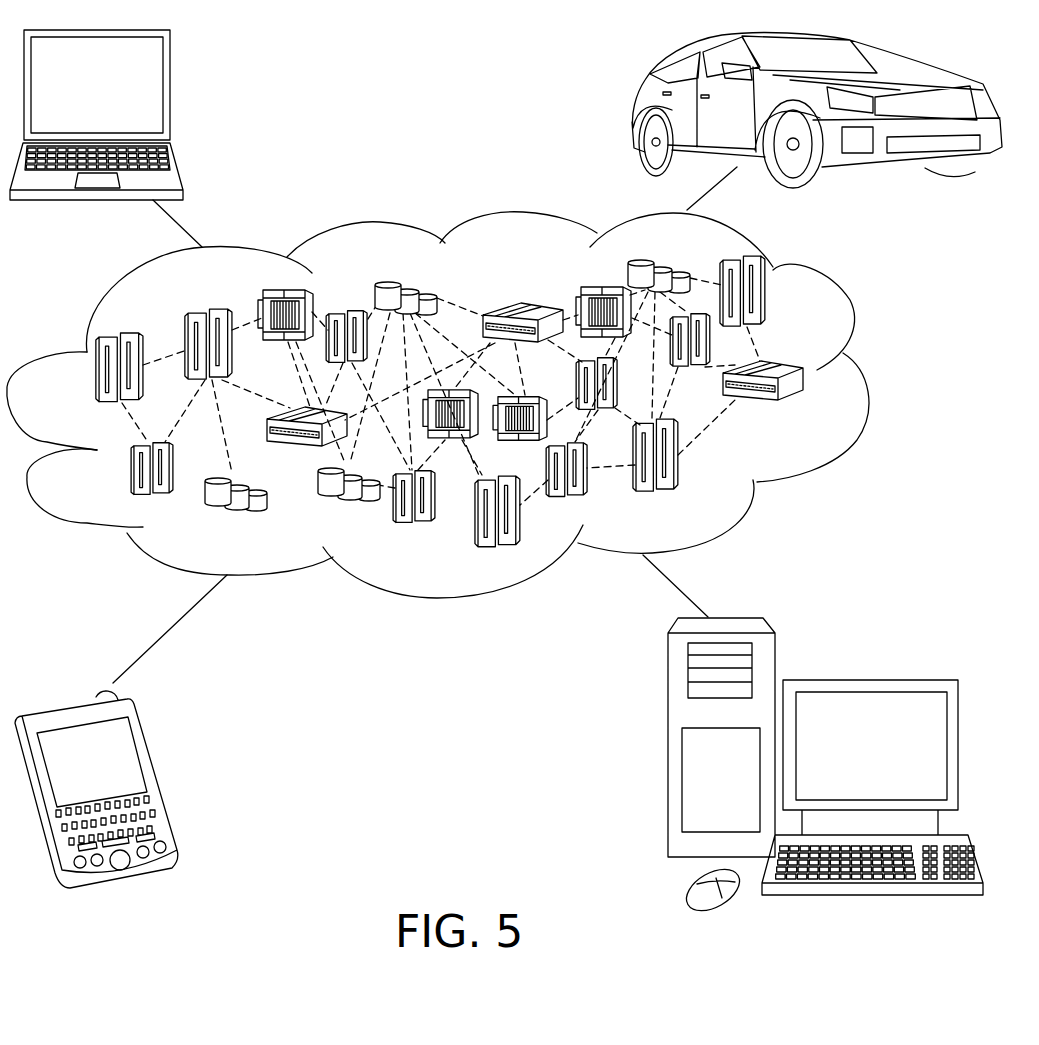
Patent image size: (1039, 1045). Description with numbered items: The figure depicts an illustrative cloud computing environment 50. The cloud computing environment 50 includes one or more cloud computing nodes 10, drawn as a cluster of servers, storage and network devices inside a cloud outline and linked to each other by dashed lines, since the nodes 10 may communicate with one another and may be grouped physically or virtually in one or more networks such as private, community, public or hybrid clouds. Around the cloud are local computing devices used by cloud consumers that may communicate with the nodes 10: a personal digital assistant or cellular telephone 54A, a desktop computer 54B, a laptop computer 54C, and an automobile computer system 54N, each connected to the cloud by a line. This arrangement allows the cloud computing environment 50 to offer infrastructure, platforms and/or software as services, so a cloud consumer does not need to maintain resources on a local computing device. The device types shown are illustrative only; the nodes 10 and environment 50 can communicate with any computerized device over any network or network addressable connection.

The cloud computing nodes 10 is at (820, 413).
The cloud computing environment 50 is at (868, 380).
The personal digital assistant or cellular telephone 54A is at (162, 777).
The desktop computer 54B is at (870, 680).
The laptop computer 54C is at (172, 95).
The automobile computer system 54N is at (641, 113).